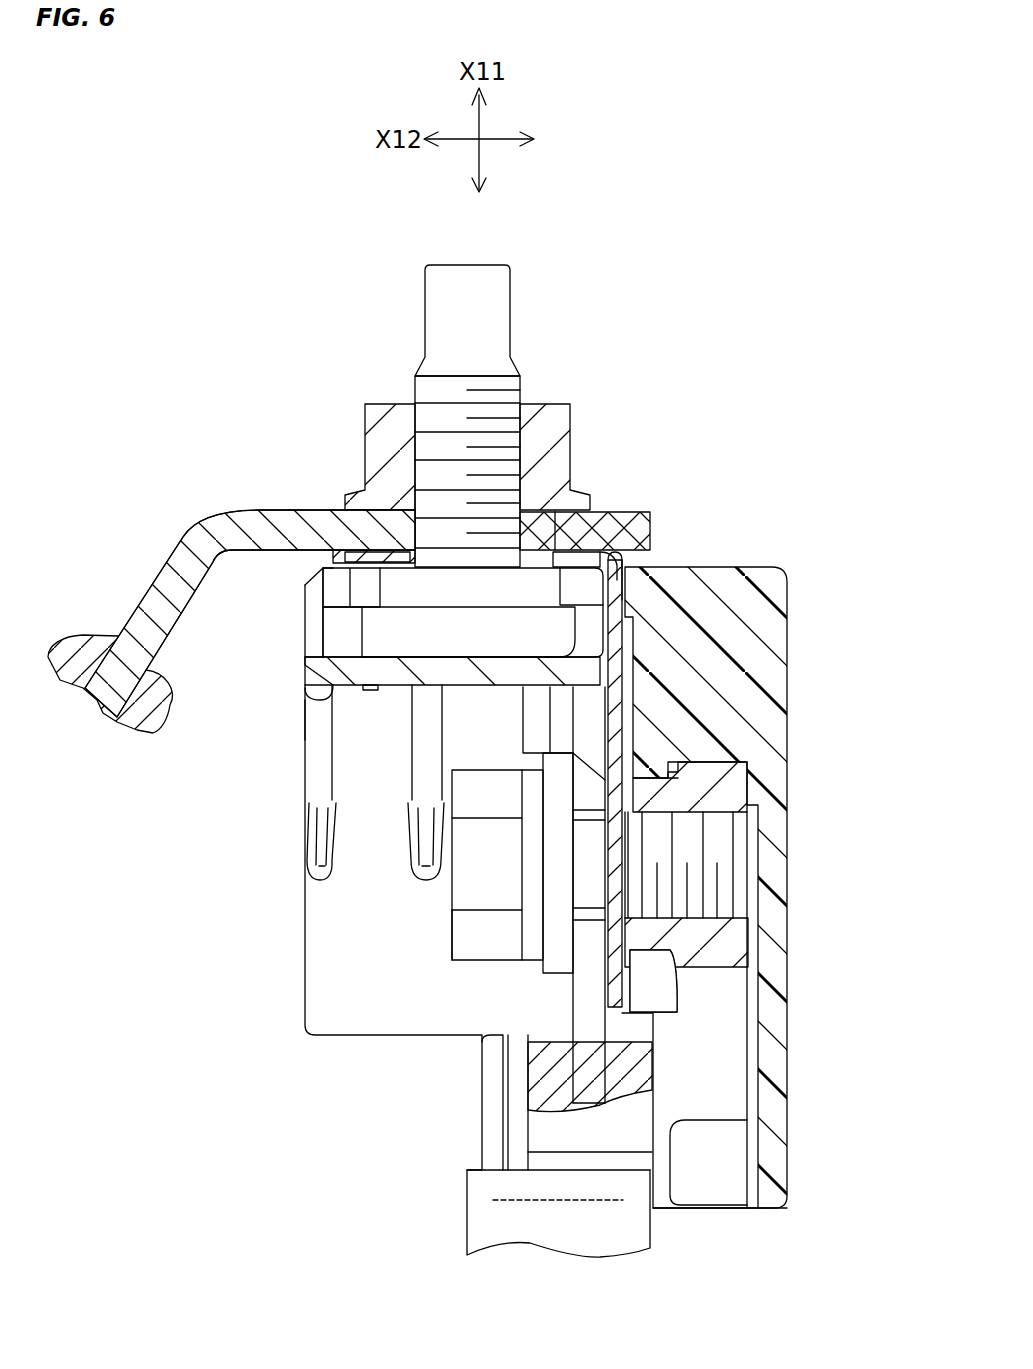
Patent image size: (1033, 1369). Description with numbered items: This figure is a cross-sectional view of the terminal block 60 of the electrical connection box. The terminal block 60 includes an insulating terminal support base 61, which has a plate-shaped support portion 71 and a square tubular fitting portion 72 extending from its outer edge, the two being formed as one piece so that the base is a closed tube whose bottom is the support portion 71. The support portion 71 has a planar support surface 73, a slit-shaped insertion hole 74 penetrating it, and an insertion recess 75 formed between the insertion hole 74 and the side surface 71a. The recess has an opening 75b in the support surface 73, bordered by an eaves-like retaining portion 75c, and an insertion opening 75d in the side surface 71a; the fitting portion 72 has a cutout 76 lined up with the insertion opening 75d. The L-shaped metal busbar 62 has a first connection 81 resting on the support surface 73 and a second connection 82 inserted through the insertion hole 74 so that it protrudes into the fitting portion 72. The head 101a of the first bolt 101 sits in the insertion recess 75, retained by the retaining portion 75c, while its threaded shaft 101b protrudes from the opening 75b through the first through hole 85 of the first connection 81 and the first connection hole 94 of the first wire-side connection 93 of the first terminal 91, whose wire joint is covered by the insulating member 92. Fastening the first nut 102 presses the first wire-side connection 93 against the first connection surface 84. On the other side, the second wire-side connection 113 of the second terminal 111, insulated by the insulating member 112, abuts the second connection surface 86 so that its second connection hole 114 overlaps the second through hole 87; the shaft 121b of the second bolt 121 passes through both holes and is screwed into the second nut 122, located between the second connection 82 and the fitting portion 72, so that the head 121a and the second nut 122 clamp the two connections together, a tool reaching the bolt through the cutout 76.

The terminal block 60 is at (305, 1000).
The terminal support base 61 is at (790, 1194).
The busbar 62 is at (305, 572).
The support portion 71 is at (790, 585).
The side surface 71a is at (305, 684).
The fitting portion 72 is at (778, 1088).
The support surface 73 is at (740, 565).
The insertion hole 74 is at (605, 645).
The insertion recess 75 is at (460, 660).
The opening 75b is at (560, 580).
The retaining portion 75c is at (600, 548).
The insertion opening 75d is at (305, 660).
The cutout 76 is at (312, 700).
The first connection 81 is at (362, 500).
The second connection 82 is at (672, 988).
The first connection surface 84 is at (385, 548).
The first through hole 85 is at (424, 565).
The second connection surface 86 is at (590, 985).
The second through hole 87 is at (580, 932).
The first terminal 91 is at (165, 575).
The insulating member 92 is at (76, 640).
The first wire-side connection 93 is at (652, 535).
The first connection hole 94 is at (552, 548).
The first bolt 101 is at (515, 270).
The head 101a is at (395, 650).
The shaft 101b is at (520, 382).
The first nut 102 is at (572, 418).
The second terminal 111 is at (530, 1082).
The insulating member 112 is at (650, 1232).
The second wire-side connection 113 is at (585, 780).
The second connection hole 114 is at (578, 905).
The second bolt 121 is at (462, 962).
The head 121a is at (462, 924).
The shaft 121b is at (720, 858).
The second nut 122 is at (745, 797).